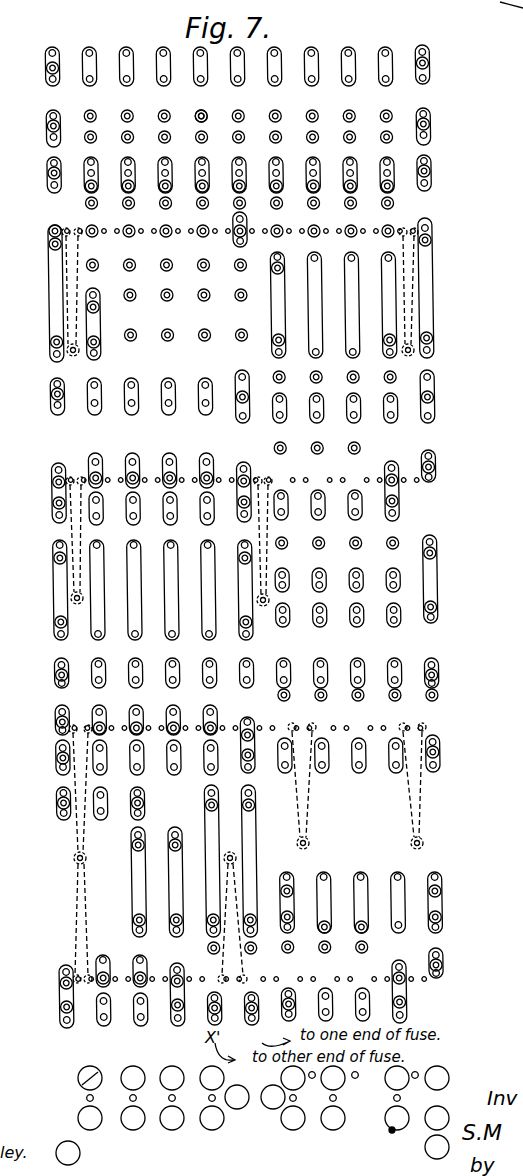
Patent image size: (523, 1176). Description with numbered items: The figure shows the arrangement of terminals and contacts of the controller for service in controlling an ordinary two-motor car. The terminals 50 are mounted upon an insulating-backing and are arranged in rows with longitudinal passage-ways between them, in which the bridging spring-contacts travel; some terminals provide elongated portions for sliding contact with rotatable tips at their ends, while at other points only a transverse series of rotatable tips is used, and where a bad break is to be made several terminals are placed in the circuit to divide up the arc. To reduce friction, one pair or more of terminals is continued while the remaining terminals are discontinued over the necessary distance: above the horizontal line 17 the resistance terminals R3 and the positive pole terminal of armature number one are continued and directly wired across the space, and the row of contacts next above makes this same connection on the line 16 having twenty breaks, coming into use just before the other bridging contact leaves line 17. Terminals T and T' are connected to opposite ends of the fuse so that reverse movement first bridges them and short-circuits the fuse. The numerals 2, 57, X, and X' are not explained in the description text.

The line 16 is at (207, 112).
The horizontal line 17 is at (106, 328).
The connecting strip 2 is at (52, 495).
The terminals 50 is at (52, 257).
The flexible connection (dashed) 57 is at (70, 293).
The resistance terminals R3 is at (47, 342).
The fuse terminal X is at (251, 1019).
The fuse terminal X' is at (213, 1019).